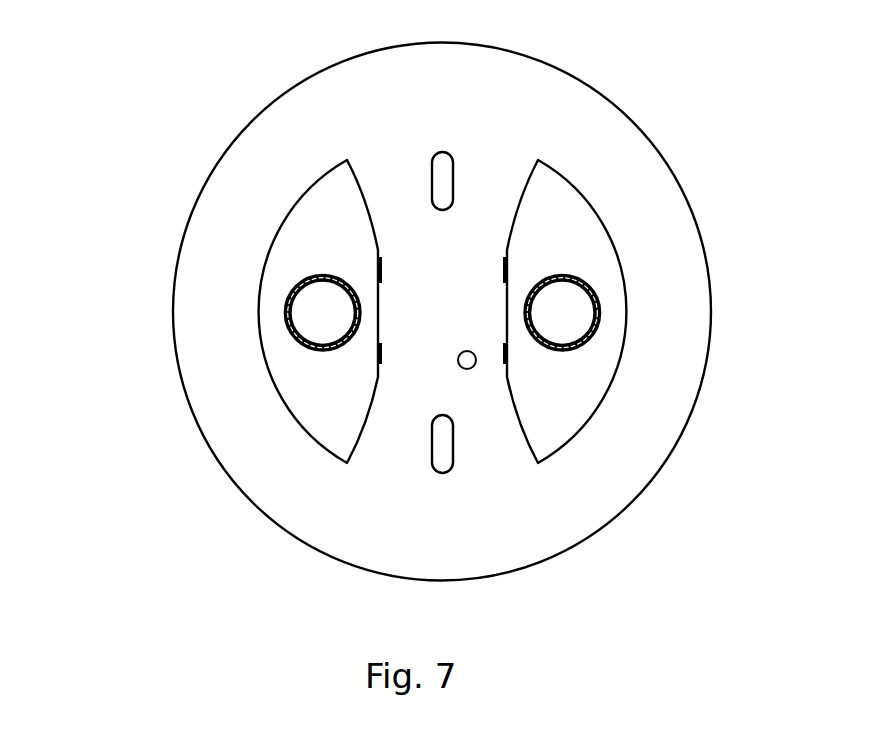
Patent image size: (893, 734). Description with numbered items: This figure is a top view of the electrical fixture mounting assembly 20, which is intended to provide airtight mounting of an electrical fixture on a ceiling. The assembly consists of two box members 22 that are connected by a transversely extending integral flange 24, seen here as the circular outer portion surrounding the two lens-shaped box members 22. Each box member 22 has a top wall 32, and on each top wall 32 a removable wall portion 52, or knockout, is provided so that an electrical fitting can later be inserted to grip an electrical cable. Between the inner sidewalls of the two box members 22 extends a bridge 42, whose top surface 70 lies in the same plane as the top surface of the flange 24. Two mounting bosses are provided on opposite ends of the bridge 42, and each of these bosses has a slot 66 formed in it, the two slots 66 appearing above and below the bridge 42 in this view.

The electrical fixture mounting assembly 20 is at (140, 140).
The box member 22 is at (582, 190).
The integral flange 24 is at (244, 218).
The top wall 32 is at (345, 236).
The bridge 42 is at (467, 277).
The removable wall portion 52 is at (337, 324).
The slot 66 is at (432, 178).
The top surface of the bridge 70 is at (458, 298).